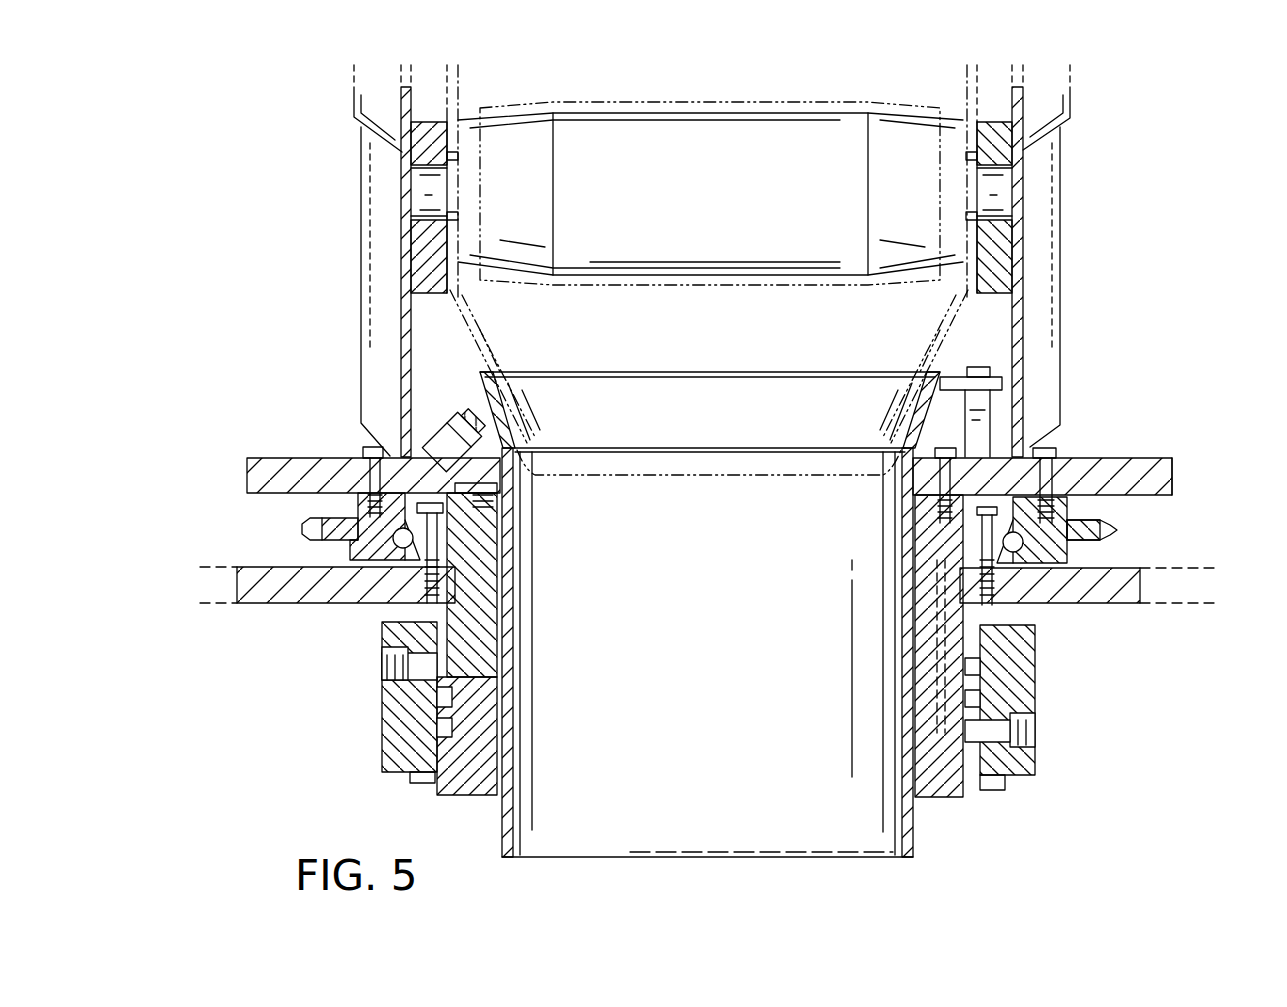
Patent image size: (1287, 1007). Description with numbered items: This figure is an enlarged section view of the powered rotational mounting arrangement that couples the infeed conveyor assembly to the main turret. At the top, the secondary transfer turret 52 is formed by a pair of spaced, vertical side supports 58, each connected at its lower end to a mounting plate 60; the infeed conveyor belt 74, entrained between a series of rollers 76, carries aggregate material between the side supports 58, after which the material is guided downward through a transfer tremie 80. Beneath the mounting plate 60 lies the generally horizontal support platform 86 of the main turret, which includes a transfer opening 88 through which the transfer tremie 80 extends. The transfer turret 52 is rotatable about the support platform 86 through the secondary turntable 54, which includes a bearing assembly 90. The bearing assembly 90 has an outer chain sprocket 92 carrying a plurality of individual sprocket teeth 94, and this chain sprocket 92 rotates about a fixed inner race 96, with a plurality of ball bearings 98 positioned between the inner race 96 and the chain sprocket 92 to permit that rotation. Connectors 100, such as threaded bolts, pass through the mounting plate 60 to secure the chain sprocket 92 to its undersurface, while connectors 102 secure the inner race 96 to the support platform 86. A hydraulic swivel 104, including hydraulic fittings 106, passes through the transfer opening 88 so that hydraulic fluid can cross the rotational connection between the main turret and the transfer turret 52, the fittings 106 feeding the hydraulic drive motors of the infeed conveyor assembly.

The secondary transfer turret 52 is at (1084, 184).
The secondary turntable 54 is at (1182, 510).
The vertical side supports 58 is at (403, 358).
The mounting plate 60 is at (295, 468).
The infeed conveyor belt 74 is at (710, 287).
The rollers 76 is at (700, 132).
The transfer tremie 80 is at (503, 820).
The support platform 86 is at (275, 595).
The transfer opening 88 is at (967, 590).
The bearing assembly 90 is at (1156, 534).
The chain sprocket 92 is at (350, 547).
The sprocket teeth 94 is at (303, 528).
The inner race 96 is at (1005, 575).
The ball bearings 98 is at (1000, 565).
The connectors 100 is at (1025, 455).
The connectors 102 is at (428, 505).
The hydraulic swivel 104 is at (458, 790).
The hydraulic fittings 106 is at (468, 428).